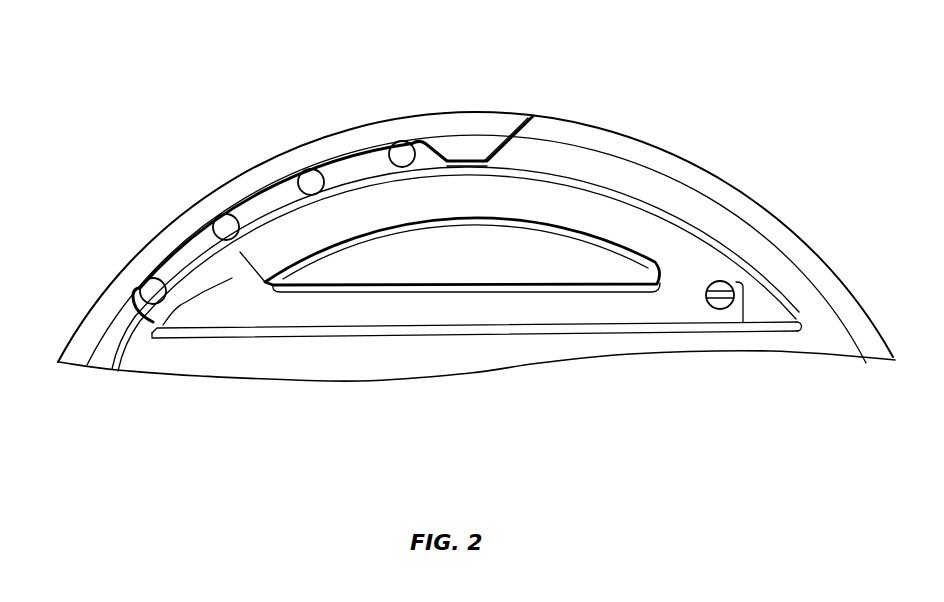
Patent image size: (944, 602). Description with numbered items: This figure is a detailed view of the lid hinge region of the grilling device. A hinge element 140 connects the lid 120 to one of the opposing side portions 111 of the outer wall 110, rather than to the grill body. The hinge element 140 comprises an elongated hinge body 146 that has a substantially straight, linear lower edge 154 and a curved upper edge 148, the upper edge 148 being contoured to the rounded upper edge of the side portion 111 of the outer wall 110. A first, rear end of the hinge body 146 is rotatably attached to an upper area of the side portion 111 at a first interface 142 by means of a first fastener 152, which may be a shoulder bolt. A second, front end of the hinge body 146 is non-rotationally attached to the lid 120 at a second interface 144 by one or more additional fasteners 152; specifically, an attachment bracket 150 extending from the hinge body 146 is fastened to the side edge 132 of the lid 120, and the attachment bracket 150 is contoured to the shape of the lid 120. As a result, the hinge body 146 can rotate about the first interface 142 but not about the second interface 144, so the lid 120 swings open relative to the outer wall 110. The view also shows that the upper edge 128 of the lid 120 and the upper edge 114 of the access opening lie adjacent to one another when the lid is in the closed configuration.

The outer wall 110 is at (663, 162).
The side portion 111 is at (805, 345).
The upper edge 114 is at (530, 140).
The lid 120 is at (118, 208).
The upper edge 128 is at (523, 113).
The side edge 132 is at (82, 348).
The hinge element 140 is at (318, 370).
The first interface 142 is at (748, 305).
The second interface 144 is at (462, 157).
The hinge body 146 is at (515, 300).
The upper edge 148 is at (660, 207).
The attachment bracket 150 is at (343, 162).
The fastener 152 is at (313, 198).
The lower edge 154 is at (650, 330).